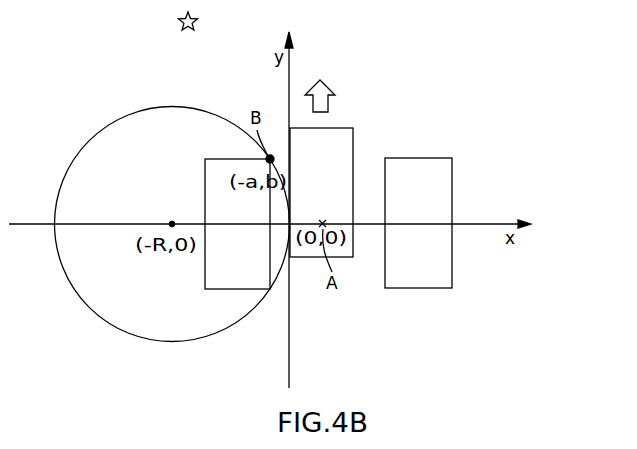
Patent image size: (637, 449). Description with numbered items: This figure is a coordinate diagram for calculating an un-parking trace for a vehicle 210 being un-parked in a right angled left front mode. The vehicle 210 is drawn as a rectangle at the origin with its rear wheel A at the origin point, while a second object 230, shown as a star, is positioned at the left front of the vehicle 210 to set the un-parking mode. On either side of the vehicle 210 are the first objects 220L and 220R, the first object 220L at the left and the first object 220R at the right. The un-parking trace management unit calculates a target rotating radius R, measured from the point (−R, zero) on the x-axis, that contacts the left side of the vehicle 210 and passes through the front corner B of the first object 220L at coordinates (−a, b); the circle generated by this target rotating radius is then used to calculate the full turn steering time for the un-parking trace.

The vehicle 210 is at (346, 127).
The first object 220L is at (260, 283).
The first object 220R is at (418, 280).
The second object 230 is at (206, 22).